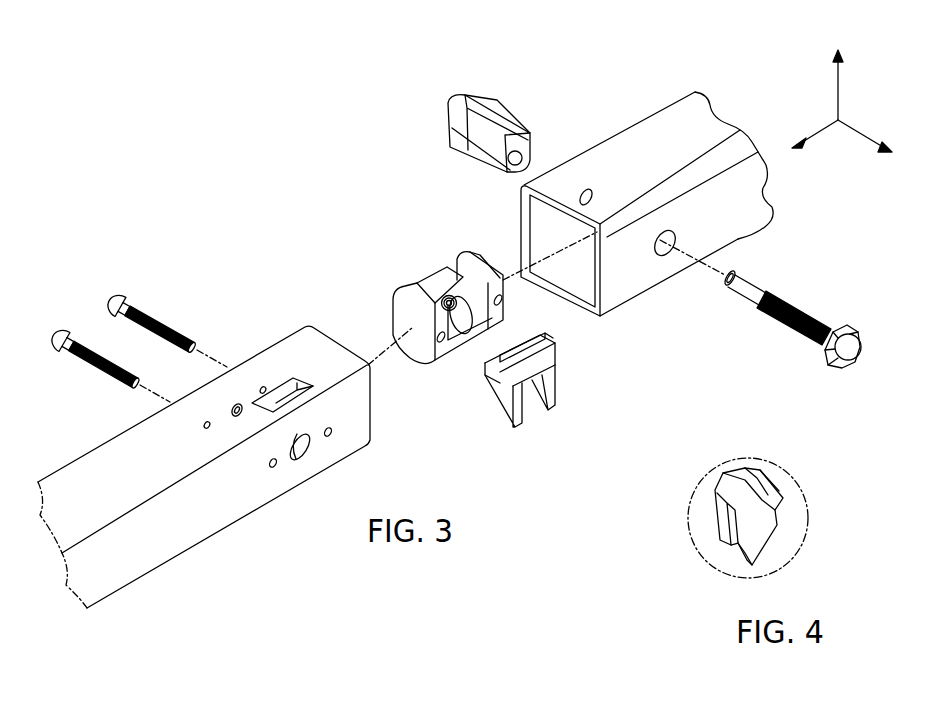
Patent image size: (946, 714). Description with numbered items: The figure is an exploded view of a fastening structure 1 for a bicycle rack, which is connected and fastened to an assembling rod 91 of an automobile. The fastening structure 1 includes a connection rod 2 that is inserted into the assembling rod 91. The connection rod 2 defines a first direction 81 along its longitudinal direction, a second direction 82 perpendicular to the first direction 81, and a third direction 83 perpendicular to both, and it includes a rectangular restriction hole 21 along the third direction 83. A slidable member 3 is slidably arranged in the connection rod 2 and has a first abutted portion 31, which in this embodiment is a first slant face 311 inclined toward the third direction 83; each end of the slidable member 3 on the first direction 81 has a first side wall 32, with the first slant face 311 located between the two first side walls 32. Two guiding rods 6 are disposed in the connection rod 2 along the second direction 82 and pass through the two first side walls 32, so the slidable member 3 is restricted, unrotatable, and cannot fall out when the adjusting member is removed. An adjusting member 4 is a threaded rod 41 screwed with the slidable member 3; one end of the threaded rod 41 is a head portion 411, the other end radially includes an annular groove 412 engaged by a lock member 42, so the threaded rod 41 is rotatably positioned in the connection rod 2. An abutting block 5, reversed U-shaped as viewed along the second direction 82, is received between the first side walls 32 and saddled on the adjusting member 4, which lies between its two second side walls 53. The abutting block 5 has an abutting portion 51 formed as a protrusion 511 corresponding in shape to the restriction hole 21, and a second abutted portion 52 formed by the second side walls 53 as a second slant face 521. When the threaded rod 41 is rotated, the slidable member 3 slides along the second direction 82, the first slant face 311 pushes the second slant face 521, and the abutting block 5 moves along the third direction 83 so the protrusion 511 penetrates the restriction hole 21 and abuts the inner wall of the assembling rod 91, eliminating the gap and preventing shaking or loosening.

In FIG. 3, the fastening structure 1 is at (273, 190).
In FIG. 3, the connection rod 2 is at (215, 517).
In FIG. 3, the restriction hole 21 is at (293, 378).
In FIG. 3, the slidable member 3 is at (400, 301).
In FIG. 3, the first abutted portion 31 is at (487, 320).
In FIG. 3, the first slant face 311 is at (445, 292).
In FIG. 3, the first side wall 32 is at (498, 293).
In FIG. 3, the adjusting member 4 is at (763, 316).
In FIG. 3, the threaded rod 41 is at (788, 330).
In FIG. 3, the head portion 411 is at (851, 359).
In FIG. 3, the annular groove 412 is at (726, 285).
In FIG. 3, the lock member 42 is at (455, 113).
In FIG. 3, the abutting block 5 is at (508, 395).
In FIG. 3, the abutting portion 51 is at (557, 378).
In FIG. 4, the abutting portion 51 is at (783, 493).
In FIG. 3, the protrusion 511 is at (553, 345).
In FIG. 4, the protrusion 511 is at (768, 483).
In FIG. 4, the second abutted portion 52 is at (720, 522).
In FIG. 4, the second slant face 521 is at (740, 550).
In FIG. 3, the second side wall 53 is at (552, 402).
In FIG. 3, the guiding rod 6 is at (65, 330).
In FIG. 3, the first direction 81 is at (822, 130).
In FIG. 3, the second direction 82 is at (860, 137).
In FIG. 3, the third direction 83 is at (840, 92).
In FIG. 3, the assembling rod 91 is at (625, 132).